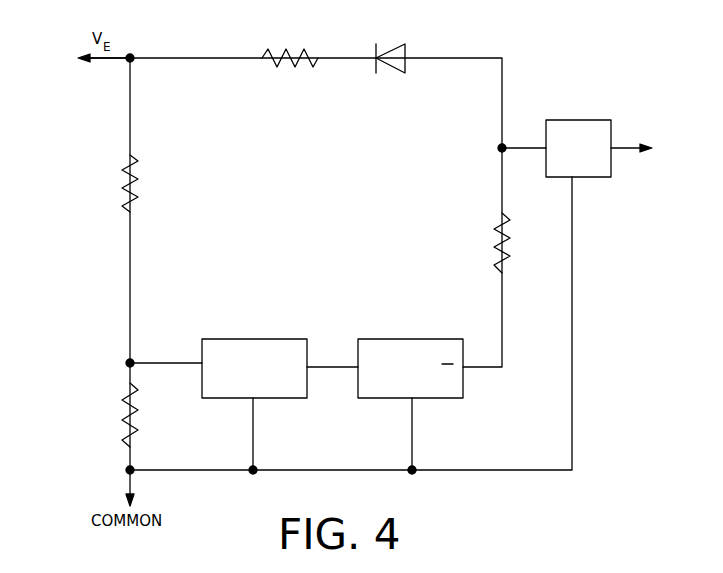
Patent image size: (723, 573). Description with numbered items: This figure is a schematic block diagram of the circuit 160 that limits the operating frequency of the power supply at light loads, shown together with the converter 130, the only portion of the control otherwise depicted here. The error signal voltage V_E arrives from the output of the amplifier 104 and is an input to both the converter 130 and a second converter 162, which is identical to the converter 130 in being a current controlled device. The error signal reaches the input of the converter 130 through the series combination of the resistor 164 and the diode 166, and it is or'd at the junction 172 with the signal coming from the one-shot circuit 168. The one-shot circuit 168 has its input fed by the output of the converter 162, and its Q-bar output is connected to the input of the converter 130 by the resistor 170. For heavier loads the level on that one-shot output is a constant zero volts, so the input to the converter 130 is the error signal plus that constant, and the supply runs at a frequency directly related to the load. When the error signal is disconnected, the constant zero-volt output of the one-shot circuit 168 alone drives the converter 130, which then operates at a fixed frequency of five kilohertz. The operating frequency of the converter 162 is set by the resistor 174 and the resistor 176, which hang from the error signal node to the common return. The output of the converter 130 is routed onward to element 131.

The amplifier 104 is at (77, 53).
The converter 130 is at (572, 125).
The output destination 131 is at (646, 152).
The circuit 160 is at (278, 194).
The converter 162 is at (260, 347).
The resistor 164 is at (302, 68).
The diode 166 is at (395, 73).
The one-shot circuit 168 is at (412, 344).
The resistor 170 is at (491, 249).
The junction 172 is at (498, 148).
The resistor 174 is at (141, 183).
The resistor 176 is at (141, 426).